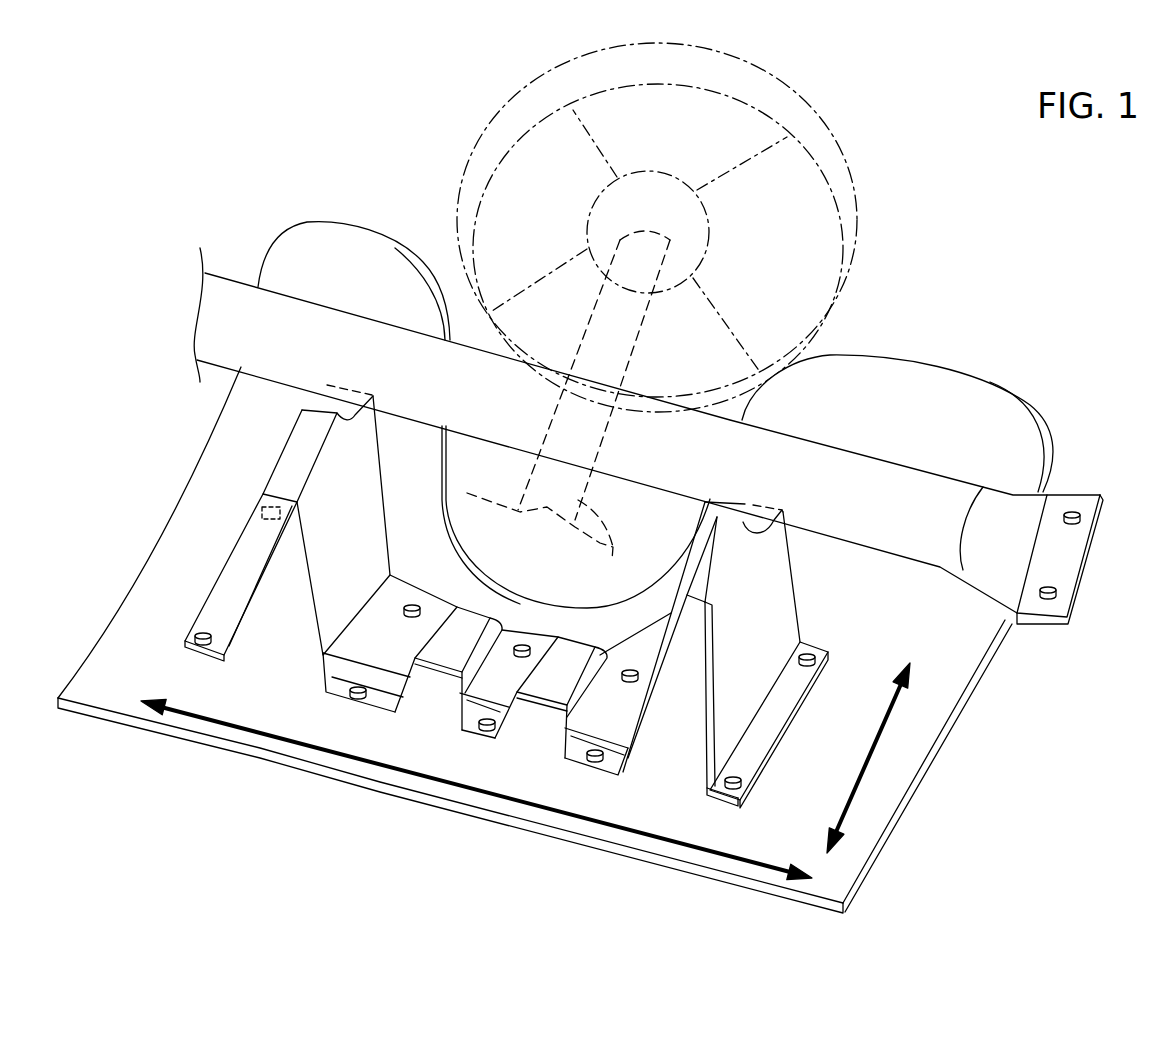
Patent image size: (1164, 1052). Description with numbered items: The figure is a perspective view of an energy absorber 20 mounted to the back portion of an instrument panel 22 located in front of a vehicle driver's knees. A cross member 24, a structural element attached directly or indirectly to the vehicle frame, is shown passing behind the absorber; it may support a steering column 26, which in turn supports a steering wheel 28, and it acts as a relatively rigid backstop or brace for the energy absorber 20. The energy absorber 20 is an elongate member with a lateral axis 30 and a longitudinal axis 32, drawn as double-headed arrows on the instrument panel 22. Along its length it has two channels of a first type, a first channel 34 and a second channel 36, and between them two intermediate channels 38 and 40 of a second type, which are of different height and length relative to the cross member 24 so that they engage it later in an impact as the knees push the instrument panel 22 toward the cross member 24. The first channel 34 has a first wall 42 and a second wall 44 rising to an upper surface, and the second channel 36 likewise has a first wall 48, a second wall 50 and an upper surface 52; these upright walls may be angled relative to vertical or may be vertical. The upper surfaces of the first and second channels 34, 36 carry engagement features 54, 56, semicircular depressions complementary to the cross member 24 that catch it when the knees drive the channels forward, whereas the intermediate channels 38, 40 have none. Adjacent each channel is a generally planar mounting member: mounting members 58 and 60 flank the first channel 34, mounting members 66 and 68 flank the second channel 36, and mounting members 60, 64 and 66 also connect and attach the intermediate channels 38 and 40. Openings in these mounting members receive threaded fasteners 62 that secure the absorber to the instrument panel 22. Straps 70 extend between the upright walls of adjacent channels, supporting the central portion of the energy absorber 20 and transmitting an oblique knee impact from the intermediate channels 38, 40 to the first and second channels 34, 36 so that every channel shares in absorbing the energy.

The energy absorber 20 is at (829, 626).
The instrument panel 22 is at (947, 700).
The cross member 24 is at (233, 283).
The steering column 26 is at (612, 548).
The steering wheel 28 is at (505, 97).
The lateral axis 30 is at (893, 708).
The longitudinal axis 32 is at (716, 850).
The first channel 34 is at (781, 606).
The second channel 36 is at (361, 527).
The intermediate channel 38 is at (588, 674).
The intermediate channel 40 is at (486, 650).
The first wall 42 is at (722, 742).
The second wall 44 is at (660, 692).
The first wall 48 is at (332, 605).
The second wall 50 is at (268, 548).
The upper surface 52 is at (300, 453).
The engagement feature 54 is at (762, 523).
The engagement feature 56 is at (350, 412).
The mounting member 58 is at (760, 723).
The mounting member 60 is at (601, 714).
The threaded fasteners 62 is at (262, 514).
The mounting member 64 is at (491, 683).
The mounting member 66 is at (379, 649).
The mounting member 68 is at (207, 614).
The straps 70 is at (330, 676).